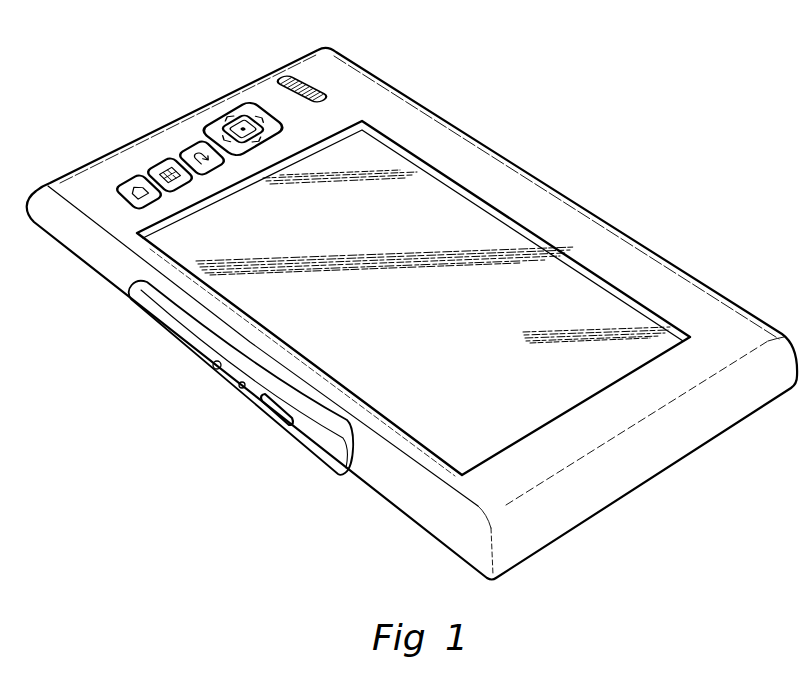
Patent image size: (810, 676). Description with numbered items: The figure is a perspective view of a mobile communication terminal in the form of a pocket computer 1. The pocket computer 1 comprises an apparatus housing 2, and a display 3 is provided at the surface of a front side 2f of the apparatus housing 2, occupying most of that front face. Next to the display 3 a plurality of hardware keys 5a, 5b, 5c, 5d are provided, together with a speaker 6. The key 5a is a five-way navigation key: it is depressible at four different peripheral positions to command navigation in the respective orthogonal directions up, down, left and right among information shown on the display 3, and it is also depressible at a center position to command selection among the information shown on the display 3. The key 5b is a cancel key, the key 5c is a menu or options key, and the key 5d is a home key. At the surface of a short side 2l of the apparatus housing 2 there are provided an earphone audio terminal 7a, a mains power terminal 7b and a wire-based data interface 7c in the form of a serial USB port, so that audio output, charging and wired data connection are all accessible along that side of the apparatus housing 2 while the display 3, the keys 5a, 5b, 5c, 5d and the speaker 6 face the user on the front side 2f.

The pocket computer 1 is at (92, 45).
The apparatus housing 2 is at (583, 208).
The short side 2l is at (113, 276).
The front side 2f is at (667, 300).
The display 3 is at (463, 330).
The five-way navigation key 5a is at (214, 116).
The cancel key 5b is at (187, 148).
The menu or options key 5c is at (157, 163).
The home key 5d is at (117, 187).
The speaker 6 is at (284, 77).
The earphone audio terminal 7a is at (213, 366).
The mains power terminal 7b is at (239, 386).
The wire-based data interface 7c is at (266, 410).